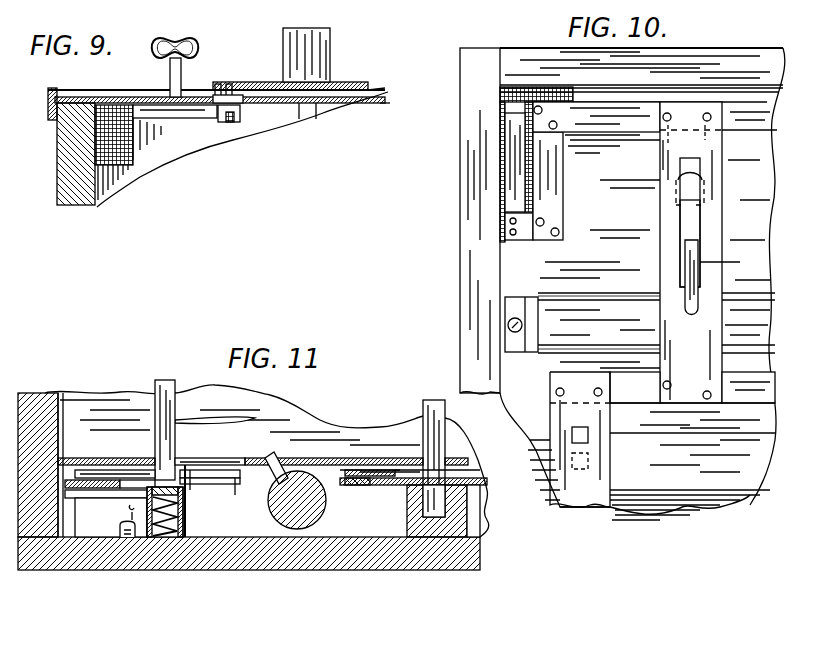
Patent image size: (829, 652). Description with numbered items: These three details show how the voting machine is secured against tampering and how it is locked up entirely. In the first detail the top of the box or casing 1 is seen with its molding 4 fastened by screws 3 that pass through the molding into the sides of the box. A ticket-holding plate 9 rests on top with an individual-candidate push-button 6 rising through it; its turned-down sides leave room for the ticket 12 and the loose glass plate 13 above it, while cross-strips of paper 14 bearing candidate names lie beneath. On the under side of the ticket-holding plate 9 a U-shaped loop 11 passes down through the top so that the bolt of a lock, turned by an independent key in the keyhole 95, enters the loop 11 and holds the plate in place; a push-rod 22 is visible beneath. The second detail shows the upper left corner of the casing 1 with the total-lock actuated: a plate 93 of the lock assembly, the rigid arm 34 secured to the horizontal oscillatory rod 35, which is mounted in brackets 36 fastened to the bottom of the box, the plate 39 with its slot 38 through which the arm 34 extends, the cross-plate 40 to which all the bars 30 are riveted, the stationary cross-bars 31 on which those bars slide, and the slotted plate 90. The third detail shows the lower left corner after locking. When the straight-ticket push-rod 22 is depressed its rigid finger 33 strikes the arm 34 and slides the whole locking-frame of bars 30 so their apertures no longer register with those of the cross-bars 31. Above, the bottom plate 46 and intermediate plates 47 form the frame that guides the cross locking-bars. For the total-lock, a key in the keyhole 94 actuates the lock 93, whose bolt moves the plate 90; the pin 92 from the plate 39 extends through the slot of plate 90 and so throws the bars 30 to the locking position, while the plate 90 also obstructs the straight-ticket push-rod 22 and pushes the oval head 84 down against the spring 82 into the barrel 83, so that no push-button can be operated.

In FIG. 9, the box or casing 1 is at (97, 207).
In FIG. 10, the box or casing 1 is at (465, 172).
In FIG. 11, the box or casing 1 is at (45, 393).
In FIG. 9, the screws 3 is at (50, 92).
In FIG. 9, the molding 4 is at (68, 90).
In FIG. 9, the push-buttons 6 is at (330, 52).
In FIG. 9, the ticket-holding plate 9 is at (261, 83).
In FIG. 9, the U-shaped loop 11 is at (226, 126).
In FIG. 9, the ticket 12 is at (385, 92).
In FIG. 9, the glass plate 13 is at (370, 87).
In FIG. 9, the cross-strips of paper 14 is at (370, 103).
In FIG. 9, the push-rod 22 is at (318, 110).
In FIG. 11, the push-rod 22 is at (157, 432).
In FIG. 10, the bars 30 is at (610, 418).
In FIG. 11, the bars 30 is at (487, 500).
In FIG. 10, the cross-bars 31 is at (690, 480).
In FIG. 11, the cross-bars 31 is at (407, 520).
In FIG. 11, the rigid finger 33 is at (205, 421).
In FIG. 10, the rigid arm 34 is at (693, 262).
In FIG. 11, the rigid arm 34 is at (275, 460).
In FIG. 10, the oscillatory rod 35 is at (656, 307).
In FIG. 11, the oscillatory rod 35 is at (320, 515).
In FIG. 10, the brackets 36 is at (530, 290).
In FIG. 11, the slot 38 is at (300, 458).
In FIG. 10, the plate 39 is at (694, 292).
In FIG. 11, the plate 39 is at (345, 470).
In FIG. 10, the cross-plate 40 is at (667, 383).
In FIG. 11, the cross-plate 40 is at (358, 488).
In FIG. 11, the bottom plate 46 is at (393, 470).
In FIG. 11, the intermediate plates 47 is at (290, 402).
In FIG. 11, the spring 82 is at (183, 520).
In FIG. 11, the barrel 83 is at (183, 540).
In FIG. 11, the head 84 is at (120, 511).
In FIG. 10, the plate 90 is at (713, 170).
In FIG. 11, the plate 90 is at (92, 490).
In FIG. 11, the pin 92 is at (200, 490).
In FIG. 10, the lock 93 is at (512, 145).
In FIG. 11, the lock 93 is at (111, 517).
In FIG. 11, the keyhole 94 is at (127, 522).
In FIG. 9, the keyhole 95 is at (184, 99).